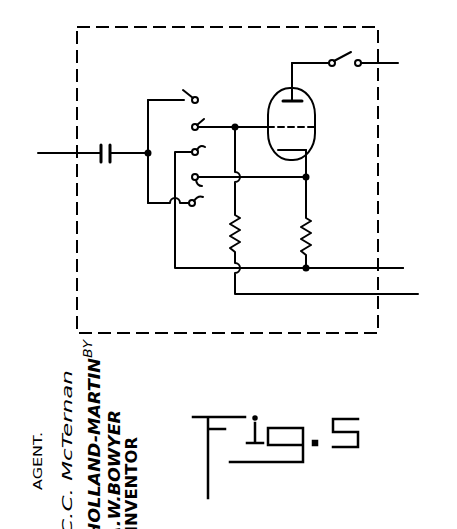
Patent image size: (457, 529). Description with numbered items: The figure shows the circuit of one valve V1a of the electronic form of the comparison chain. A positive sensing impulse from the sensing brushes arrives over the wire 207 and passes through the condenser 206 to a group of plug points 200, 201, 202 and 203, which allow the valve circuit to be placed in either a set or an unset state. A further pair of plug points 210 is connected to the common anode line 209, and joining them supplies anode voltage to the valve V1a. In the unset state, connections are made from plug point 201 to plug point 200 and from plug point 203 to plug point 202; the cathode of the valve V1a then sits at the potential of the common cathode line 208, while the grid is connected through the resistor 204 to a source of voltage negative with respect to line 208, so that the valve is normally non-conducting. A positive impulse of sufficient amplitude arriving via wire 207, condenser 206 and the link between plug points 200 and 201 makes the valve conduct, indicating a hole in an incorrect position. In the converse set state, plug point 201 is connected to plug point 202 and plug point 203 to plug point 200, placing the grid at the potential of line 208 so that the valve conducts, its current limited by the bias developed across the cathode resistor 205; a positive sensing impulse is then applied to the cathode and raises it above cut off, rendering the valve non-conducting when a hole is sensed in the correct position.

The plug point 200 is at (184, 152).
The plug point 201 is at (230, 116).
The plug point 202 is at (289, 206).
The plug point 203 is at (249, 189).
The resistor 204 is at (257, 232).
The cathode resistor 205 is at (310, 231).
The condenser 206 is at (117, 136).
The wire 207 is at (63, 157).
The common cathode line 208 is at (396, 258).
The common anode line 209 is at (394, 53).
The plug points 210 is at (327, 50).
The valve V1a is at (335, 125).